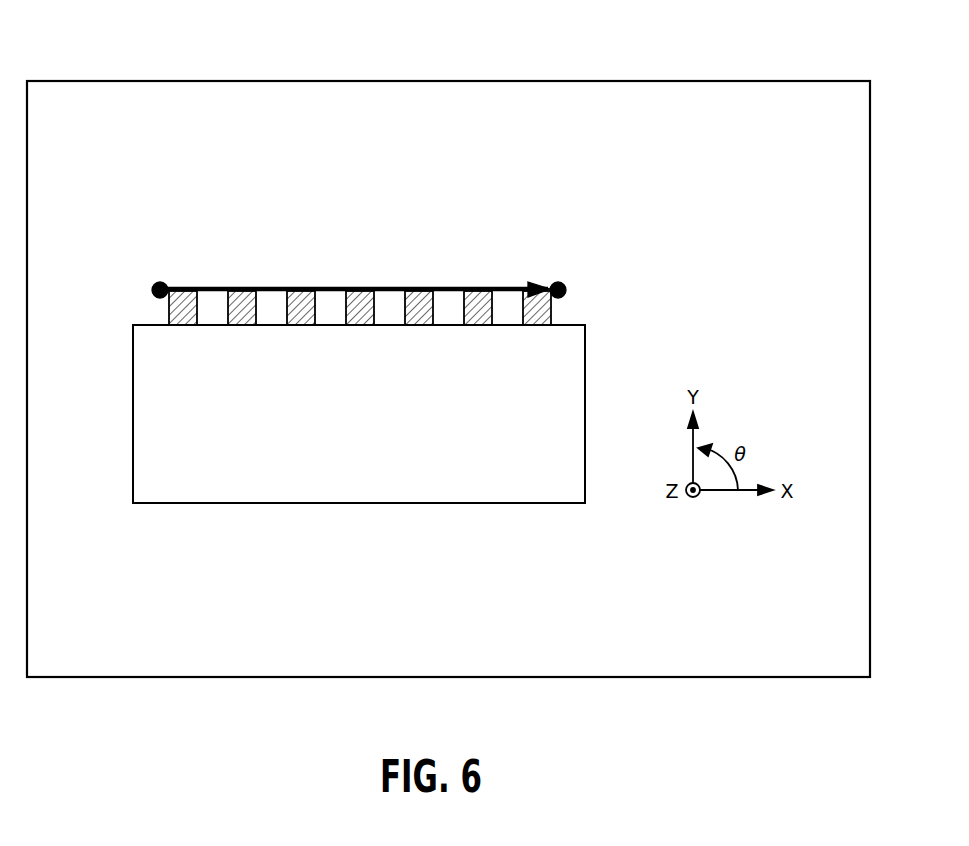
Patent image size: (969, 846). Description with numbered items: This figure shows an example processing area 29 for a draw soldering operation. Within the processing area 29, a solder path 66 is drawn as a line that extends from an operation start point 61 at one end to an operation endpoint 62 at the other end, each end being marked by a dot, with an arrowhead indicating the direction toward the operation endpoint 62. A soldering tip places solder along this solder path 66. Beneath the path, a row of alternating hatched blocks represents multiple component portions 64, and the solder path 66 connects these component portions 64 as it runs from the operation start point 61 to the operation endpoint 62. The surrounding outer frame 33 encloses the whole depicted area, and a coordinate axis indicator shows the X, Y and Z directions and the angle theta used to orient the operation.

The substrate / wafer area 33 is at (662, 81).
The processing area 29 is at (347, 279).
The solder path 66 is at (330, 288).
The component portions 64 is at (337, 310).
The operation start point 61 is at (156, 286).
The operation endpoint 62 is at (566, 282).